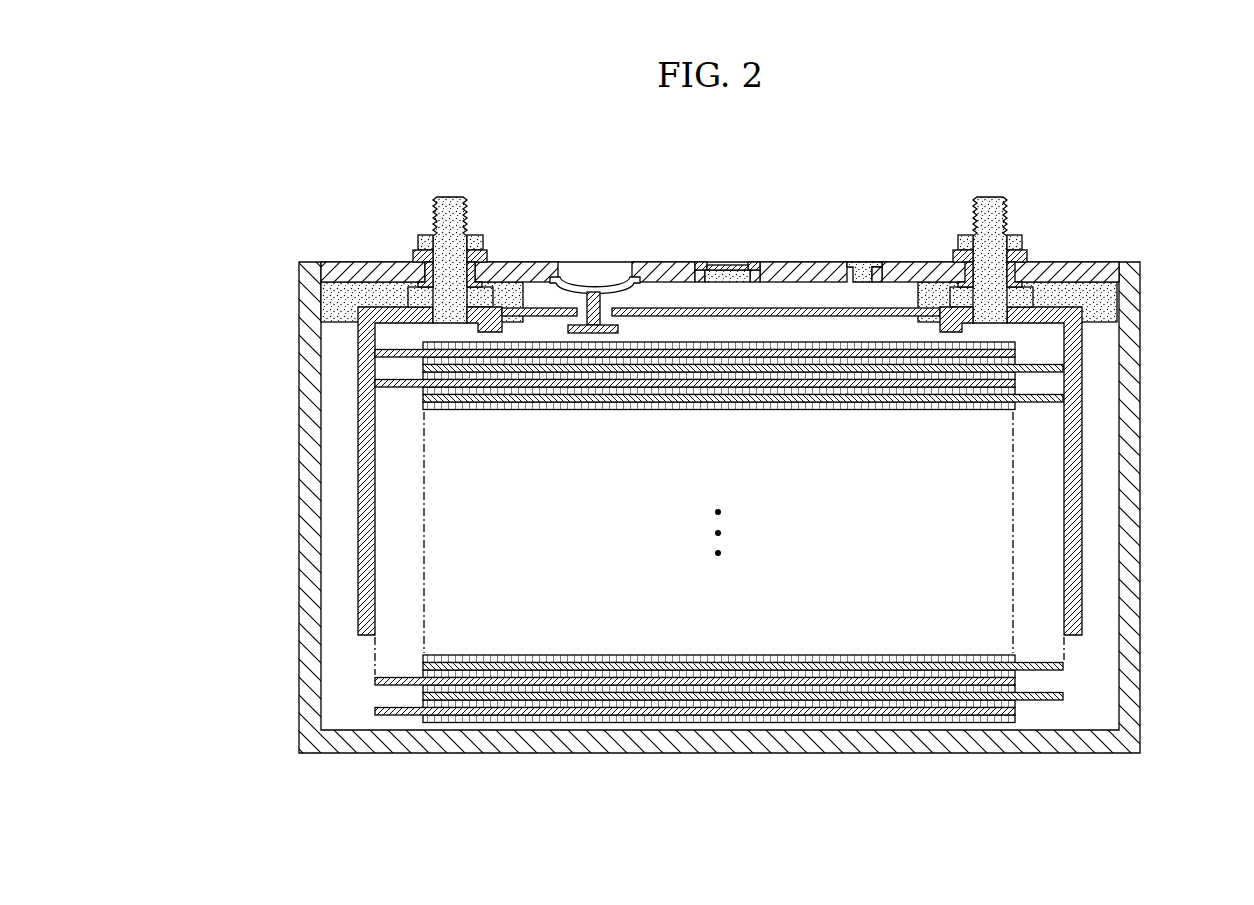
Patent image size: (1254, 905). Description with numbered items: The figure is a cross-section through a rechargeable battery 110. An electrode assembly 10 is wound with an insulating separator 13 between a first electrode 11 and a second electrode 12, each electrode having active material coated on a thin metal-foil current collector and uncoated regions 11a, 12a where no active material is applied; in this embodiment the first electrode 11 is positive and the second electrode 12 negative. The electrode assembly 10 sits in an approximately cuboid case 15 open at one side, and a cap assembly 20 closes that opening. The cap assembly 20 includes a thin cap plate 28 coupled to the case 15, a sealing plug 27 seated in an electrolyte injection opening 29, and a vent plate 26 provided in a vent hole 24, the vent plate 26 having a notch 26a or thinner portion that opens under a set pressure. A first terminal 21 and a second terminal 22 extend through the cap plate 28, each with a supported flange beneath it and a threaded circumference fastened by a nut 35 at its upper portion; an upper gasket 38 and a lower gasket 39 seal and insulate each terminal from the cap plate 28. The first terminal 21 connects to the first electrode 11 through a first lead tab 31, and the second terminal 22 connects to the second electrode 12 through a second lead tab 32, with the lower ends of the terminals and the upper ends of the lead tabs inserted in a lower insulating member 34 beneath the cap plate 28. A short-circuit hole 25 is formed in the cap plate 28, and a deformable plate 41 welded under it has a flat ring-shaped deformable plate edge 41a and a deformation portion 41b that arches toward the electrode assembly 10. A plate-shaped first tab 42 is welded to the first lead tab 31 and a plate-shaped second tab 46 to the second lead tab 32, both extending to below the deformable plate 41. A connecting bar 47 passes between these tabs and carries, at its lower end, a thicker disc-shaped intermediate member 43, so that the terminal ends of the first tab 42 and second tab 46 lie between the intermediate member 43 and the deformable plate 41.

The rechargeable battery 110 is at (917, 148).
The electrode assembly 10 is at (718, 579).
The first electrode 11 is at (515, 712).
The uncoated region 11a is at (390, 716).
The second electrode 12 is at (915, 692).
The uncoated region 12a is at (1050, 701).
The insulating separator 13 is at (722, 703).
The case 15 is at (1130, 458).
The cap assembly 20 is at (793, 261).
The first terminal 21 is at (450, 197).
The second terminal 22 is at (990, 197).
The vent hole 24 is at (730, 266).
The short-circuit hole 25 is at (610, 264).
The vent plate 26 is at (755, 263).
The notch 26a is at (702, 263).
The sealing plug 27 is at (855, 264).
The cap plate 28 is at (1093, 270).
The electrolyte injection opening 29 is at (878, 265).
The first lead tab 31 is at (360, 470).
The second lead tab 32 is at (1070, 570).
The lower insulating member 34 is at (335, 300).
The nut 35 is at (424, 243).
The upper gasket 38 is at (413, 257).
The lower gasket 39 is at (426, 270).
The deformable plate 41 is at (587, 284).
The deformable plate edge 41a is at (537, 307).
The deformation portion 41b is at (567, 282).
The first tab 42 is at (512, 285).
The intermediate member 43 is at (619, 332).
The second tab 46 is at (650, 308).
The connecting bar 47 is at (596, 298).